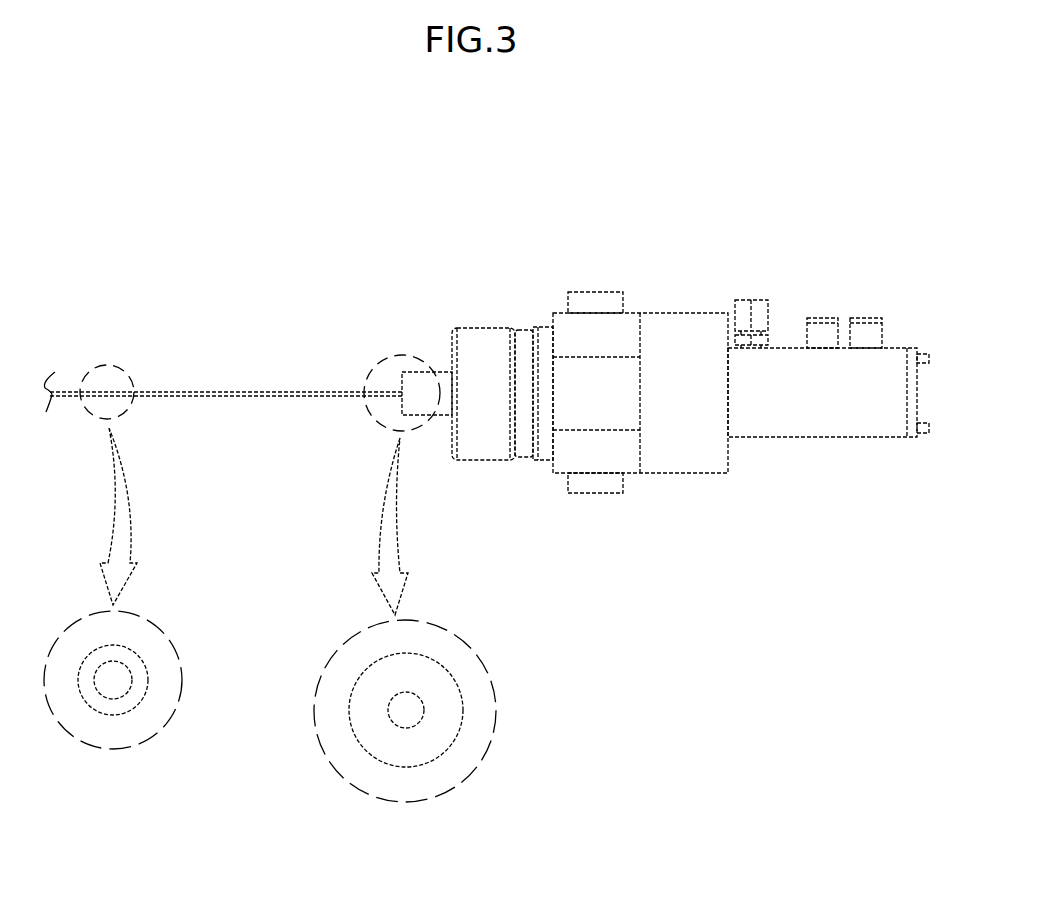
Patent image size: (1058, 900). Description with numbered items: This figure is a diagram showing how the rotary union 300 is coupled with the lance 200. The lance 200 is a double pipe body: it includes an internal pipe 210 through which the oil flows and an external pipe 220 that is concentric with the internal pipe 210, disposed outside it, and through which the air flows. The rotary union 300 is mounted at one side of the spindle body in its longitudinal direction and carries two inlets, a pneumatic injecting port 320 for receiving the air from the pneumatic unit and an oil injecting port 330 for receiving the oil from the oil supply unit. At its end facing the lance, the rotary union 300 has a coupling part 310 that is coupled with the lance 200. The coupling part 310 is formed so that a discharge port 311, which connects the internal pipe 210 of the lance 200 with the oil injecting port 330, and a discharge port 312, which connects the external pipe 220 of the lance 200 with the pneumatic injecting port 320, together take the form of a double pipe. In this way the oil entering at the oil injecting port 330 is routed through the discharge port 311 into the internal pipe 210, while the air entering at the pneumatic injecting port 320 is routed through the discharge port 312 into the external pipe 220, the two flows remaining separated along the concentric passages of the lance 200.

The lance 200 is at (259, 396).
The internal pipe 210 is at (113, 680).
The external pipe 220 is at (127, 700).
The rotary union 300 is at (682, 303).
The coupling part 310 is at (412, 383).
The discharge port 311 is at (405, 713).
The discharge port 312 is at (438, 735).
The pneumatic injecting port 320 is at (762, 302).
The oil injecting port 330 is at (590, 297).